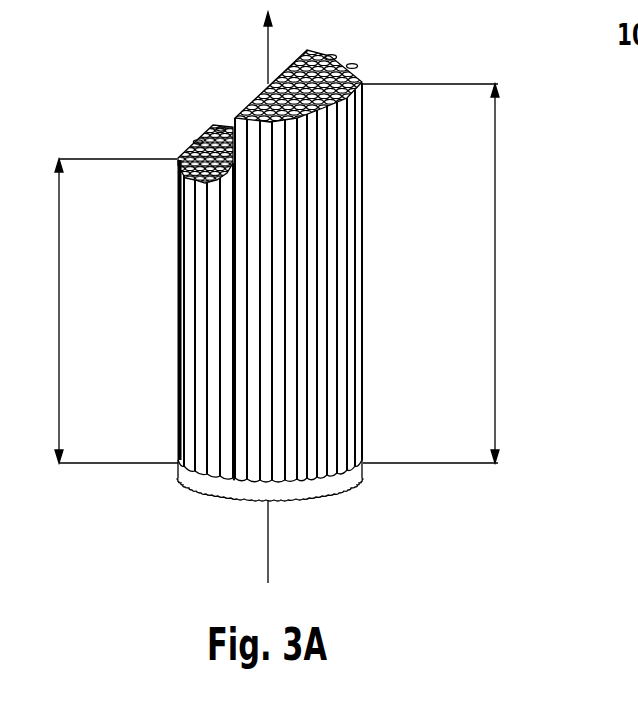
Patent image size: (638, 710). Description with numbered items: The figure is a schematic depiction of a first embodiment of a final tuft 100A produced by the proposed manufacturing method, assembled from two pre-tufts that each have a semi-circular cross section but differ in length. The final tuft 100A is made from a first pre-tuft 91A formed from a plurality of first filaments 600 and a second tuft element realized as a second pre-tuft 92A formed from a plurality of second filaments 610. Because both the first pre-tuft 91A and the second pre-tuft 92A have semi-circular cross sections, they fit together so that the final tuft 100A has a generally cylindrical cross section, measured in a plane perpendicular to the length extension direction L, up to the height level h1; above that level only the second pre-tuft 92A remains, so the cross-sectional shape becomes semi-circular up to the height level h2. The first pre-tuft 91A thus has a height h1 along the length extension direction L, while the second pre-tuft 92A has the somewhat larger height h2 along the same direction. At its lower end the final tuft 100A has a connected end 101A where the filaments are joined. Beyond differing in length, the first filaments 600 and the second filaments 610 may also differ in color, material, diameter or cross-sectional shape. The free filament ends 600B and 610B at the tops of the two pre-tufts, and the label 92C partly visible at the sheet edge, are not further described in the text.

The final tuft 100A is at (288, 271).
The first filaments 600 is at (203, 353).
The second filaments 610 is at (330, 380).
The first pre-tuft 91A is at (200, 253).
The second pre-tuft 92A is at (337, 214).
The fiber ends of first portion 600B is at (220, 128).
The fiber ends of second portion 610B is at (352, 66).
The connected end 101A is at (323, 482).
The length extension direction L is at (267, 52).
The height of first pre-tuft h1 is at (59, 300).
The height of second pre-tuft h2 is at (495, 258).
The end face 92C is at (602, 698).